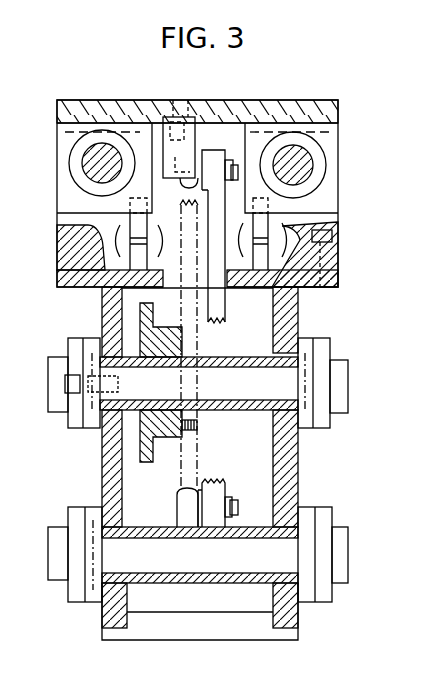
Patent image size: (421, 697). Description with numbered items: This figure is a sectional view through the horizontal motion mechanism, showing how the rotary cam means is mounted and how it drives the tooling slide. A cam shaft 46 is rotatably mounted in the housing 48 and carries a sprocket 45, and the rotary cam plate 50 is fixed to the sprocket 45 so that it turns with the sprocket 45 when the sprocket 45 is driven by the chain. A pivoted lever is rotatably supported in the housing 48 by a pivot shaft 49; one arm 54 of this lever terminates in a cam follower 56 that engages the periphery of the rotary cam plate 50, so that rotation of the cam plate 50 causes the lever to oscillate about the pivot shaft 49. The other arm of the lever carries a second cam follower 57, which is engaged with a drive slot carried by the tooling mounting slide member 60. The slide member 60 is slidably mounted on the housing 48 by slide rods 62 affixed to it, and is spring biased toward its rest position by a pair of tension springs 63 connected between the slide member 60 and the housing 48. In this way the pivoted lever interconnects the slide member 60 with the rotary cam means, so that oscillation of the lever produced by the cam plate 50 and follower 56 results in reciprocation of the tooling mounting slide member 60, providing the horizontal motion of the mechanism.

The sprocket 45 is at (146, 308).
The cam shaft 46 is at (228, 402).
The housing 48 is at (103, 472).
The pivot shaft 49 is at (60, 567).
The rotary cam plate 50 is at (200, 340).
The arm 54 is at (228, 489).
The cam follower 56 is at (214, 200).
The cam follower 57 is at (186, 189).
The tooling mounting slide member 60 is at (122, 100).
The slide rods 62 is at (96, 160).
The tension springs 63 is at (338, 226).